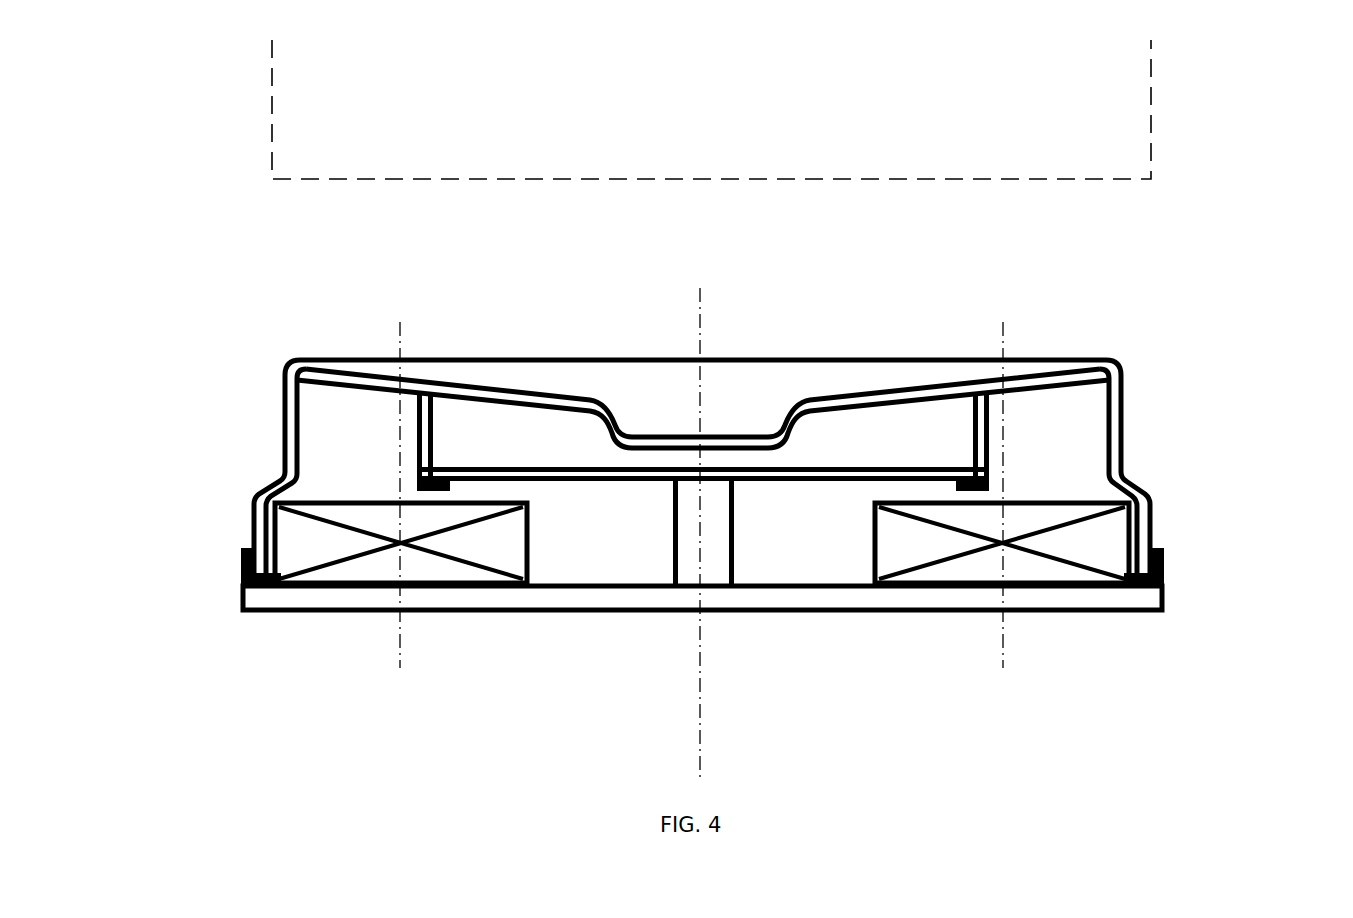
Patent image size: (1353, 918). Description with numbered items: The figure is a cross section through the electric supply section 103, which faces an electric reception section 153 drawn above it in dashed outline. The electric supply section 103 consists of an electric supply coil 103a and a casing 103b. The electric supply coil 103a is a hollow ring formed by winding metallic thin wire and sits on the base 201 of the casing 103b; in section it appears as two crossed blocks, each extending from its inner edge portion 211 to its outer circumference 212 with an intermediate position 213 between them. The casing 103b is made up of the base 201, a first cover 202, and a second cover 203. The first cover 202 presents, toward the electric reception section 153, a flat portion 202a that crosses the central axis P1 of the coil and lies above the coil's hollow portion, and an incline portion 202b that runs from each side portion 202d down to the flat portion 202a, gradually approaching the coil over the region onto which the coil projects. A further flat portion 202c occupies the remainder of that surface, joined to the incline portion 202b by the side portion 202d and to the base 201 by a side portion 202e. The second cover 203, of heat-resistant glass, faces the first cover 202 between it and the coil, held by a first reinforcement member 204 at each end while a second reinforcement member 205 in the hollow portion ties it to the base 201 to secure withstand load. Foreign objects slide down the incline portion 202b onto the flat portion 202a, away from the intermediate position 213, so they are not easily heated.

The electric reception section 153 is at (1151, 128).
The electric supply section 103 is at (773, 277).
The electric supply coil 103a is at (1014, 568).
The casing 103b is at (1142, 358).
The base 201 is at (1167, 611).
The first cover 202 is at (925, 371).
The flat portion 202a is at (646, 433).
The incline portion 202b is at (505, 377).
The flat portion 202c is at (268, 486).
The side portion 202d is at (284, 390).
The side portion 202e is at (253, 507).
The second cover 203 is at (845, 462).
The first reinforcement member 204 is at (434, 446).
The second reinforcement member 205 is at (737, 586).
The inner edge portion 211 is at (523, 553).
The outer circumference 212 is at (289, 568).
The intermediate position 213 is at (400, 502).
The central axis P1 is at (701, 533).